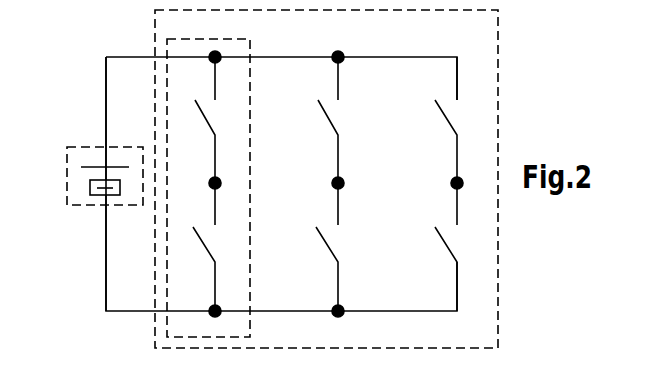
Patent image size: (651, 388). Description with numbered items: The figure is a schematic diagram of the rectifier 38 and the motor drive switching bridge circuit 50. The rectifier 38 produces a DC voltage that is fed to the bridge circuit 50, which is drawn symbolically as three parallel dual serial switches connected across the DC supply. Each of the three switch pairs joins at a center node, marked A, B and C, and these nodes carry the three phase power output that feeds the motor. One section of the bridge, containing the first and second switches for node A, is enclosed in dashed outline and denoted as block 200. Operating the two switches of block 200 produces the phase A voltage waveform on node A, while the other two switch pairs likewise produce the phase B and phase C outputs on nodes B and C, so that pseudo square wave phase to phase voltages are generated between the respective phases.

The rectifier 38 is at (92, 205).
The motor drive switching bridge circuit 50 is at (364, 179).
The block (switch section) 200 is at (250, 40).